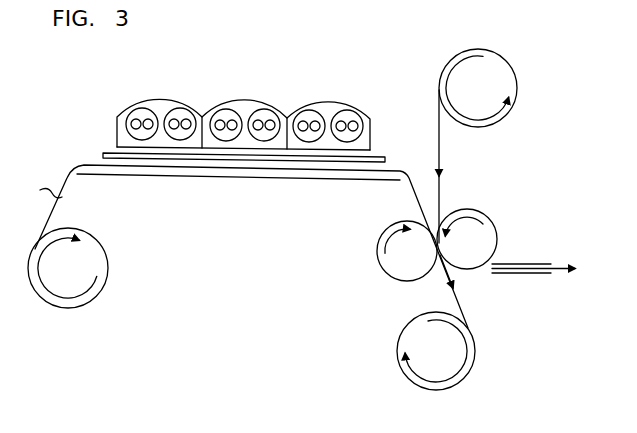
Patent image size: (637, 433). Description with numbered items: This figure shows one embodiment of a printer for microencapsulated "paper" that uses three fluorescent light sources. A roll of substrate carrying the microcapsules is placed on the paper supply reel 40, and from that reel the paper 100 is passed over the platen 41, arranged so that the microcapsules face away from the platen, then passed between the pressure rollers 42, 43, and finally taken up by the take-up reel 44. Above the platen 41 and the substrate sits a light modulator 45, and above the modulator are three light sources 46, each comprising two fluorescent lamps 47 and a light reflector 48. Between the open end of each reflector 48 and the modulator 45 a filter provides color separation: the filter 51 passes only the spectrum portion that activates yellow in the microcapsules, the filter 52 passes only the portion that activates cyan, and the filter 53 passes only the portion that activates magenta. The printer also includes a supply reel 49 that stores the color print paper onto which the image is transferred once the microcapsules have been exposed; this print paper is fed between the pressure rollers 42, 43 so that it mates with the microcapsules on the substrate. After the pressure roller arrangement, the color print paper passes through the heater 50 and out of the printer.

The paper 100 is at (33, 190).
The paper supply reel 40 is at (108, 257).
The platen 41 is at (134, 178).
The pressure roller 42 is at (377, 259).
The pressure roller 43 is at (494, 225).
The take-up reel 44 is at (398, 338).
The light modulator 45 is at (386, 159).
The light source 46 is at (128, 101).
The fluorescent lamp 47 is at (182, 109).
The light reflector 48 is at (147, 100).
The supply reel 49 is at (512, 69).
The heater 50 is at (528, 263).
The filter 51 is at (182, 148).
The filter 52 is at (250, 150).
The filter 53 is at (327, 150).